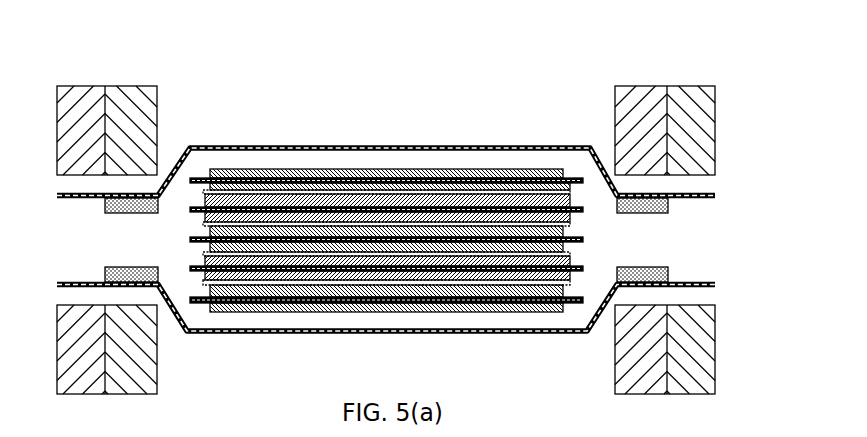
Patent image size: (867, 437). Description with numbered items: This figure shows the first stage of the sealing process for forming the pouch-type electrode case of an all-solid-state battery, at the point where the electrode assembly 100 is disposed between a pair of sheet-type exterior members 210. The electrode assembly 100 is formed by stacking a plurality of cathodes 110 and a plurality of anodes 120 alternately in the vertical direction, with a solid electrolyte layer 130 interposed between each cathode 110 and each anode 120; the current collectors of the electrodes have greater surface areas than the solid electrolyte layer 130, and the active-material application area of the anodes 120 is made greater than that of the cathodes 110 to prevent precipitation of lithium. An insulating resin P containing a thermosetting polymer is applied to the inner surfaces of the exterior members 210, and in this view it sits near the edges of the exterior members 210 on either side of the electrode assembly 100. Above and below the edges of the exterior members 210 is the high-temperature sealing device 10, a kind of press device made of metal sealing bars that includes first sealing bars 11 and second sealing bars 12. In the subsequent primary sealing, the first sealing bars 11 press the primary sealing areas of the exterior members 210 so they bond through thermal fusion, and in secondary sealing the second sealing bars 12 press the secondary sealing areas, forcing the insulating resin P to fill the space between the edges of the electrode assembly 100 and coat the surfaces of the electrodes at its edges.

The sealing device 10 is at (665, 88).
The first sealing bars 11 is at (682, 93).
The second sealing bars 12 is at (642, 93).
The electrode assembly 100 is at (475, 180).
The cathodes 110 is at (572, 168).
The anodes 120 is at (585, 200).
The solid electrolyte layer 130 is at (537, 190).
The exterior members 210 is at (353, 146).
The insulating resin P is at (668, 268).